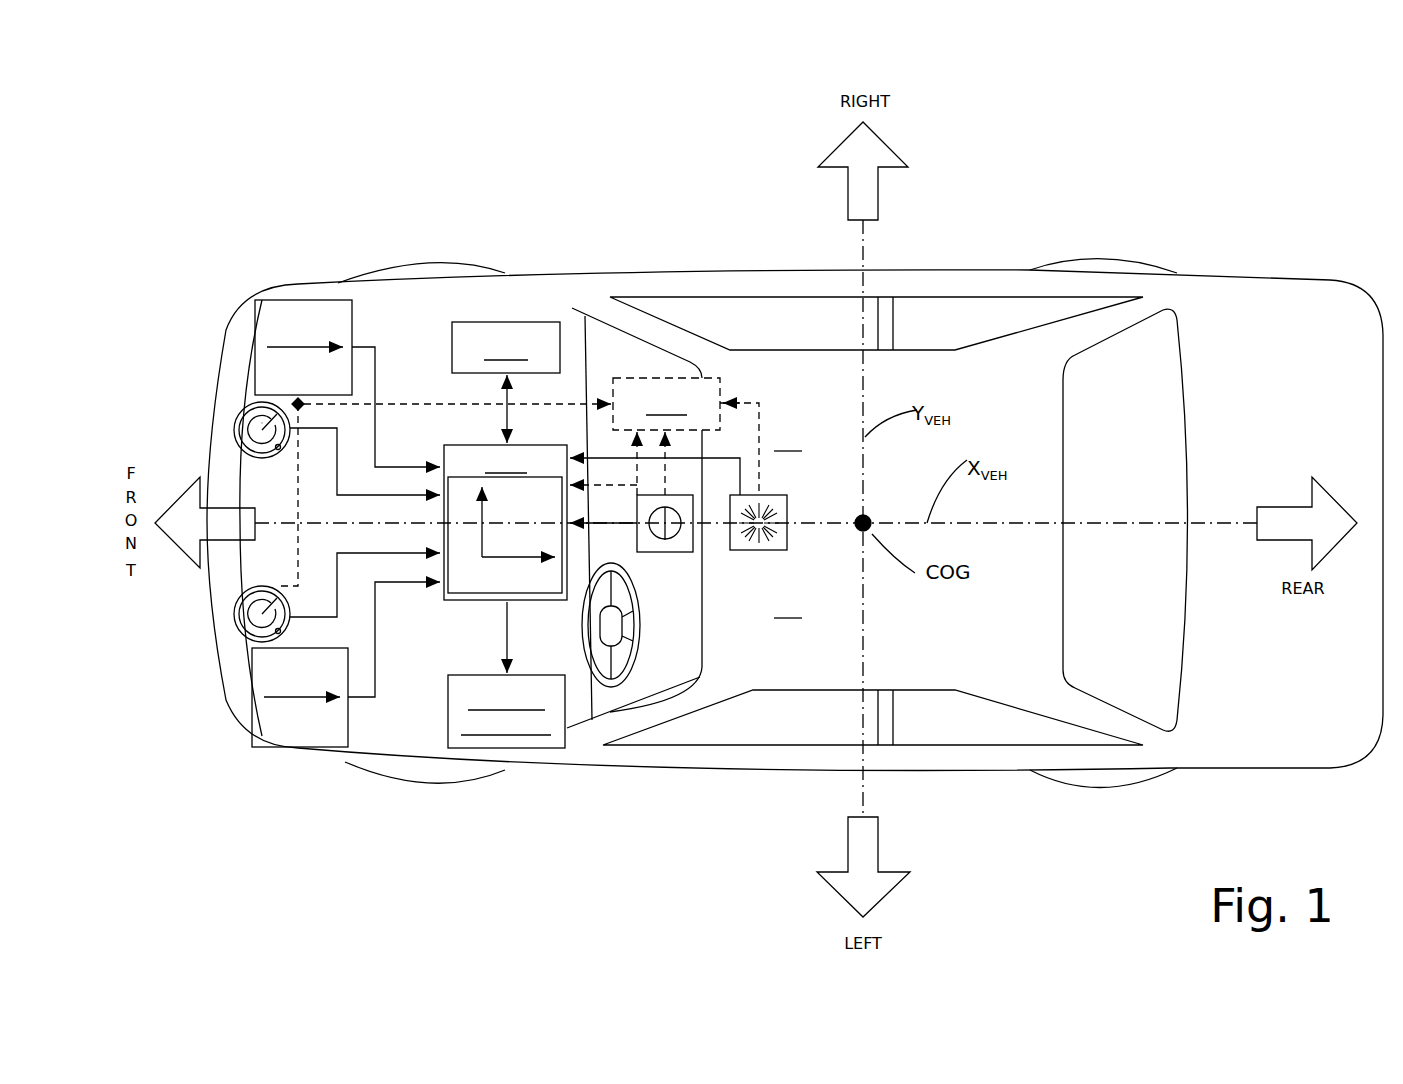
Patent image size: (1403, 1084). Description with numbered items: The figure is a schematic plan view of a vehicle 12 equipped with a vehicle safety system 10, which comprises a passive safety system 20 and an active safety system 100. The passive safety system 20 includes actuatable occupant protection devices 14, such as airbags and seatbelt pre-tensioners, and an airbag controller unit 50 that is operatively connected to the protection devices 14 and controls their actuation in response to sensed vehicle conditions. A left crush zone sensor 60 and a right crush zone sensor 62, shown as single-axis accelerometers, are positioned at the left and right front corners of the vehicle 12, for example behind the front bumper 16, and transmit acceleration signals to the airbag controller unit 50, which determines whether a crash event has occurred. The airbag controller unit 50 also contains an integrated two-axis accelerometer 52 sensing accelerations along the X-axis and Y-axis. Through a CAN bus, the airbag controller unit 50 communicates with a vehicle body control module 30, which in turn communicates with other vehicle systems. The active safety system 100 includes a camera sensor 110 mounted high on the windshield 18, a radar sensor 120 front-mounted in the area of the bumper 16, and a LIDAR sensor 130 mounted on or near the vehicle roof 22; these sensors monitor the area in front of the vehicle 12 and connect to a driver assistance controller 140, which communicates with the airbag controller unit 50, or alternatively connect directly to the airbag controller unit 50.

The vehicle safety system 10 is at (488, 248).
The vehicle 12 is at (385, 140).
The actuatable vehicle occupant protection devices 14 is at (520, 748).
The front bumper 16 is at (225, 463).
The windshield 18 is at (613, 360).
The passive safety system 20 is at (433, 287).
The vehicle roof 22 is at (950, 370).
The vehicle body control module 30 is at (510, 322).
The airbag controller unit 50 is at (481, 525).
The integrated 2-axis accelerometer 52 is at (467, 580).
The left crush zone sensor 60 is at (327, 738).
The right crush zone sensor 62 is at (298, 307).
The active safety system 100 is at (677, 360).
The camera sensor 110 is at (677, 552).
The radar sensor 120 is at (235, 428).
The laser radar (LIDAR) sensor 130 is at (767, 550).
The DAS controller 140 is at (683, 392).